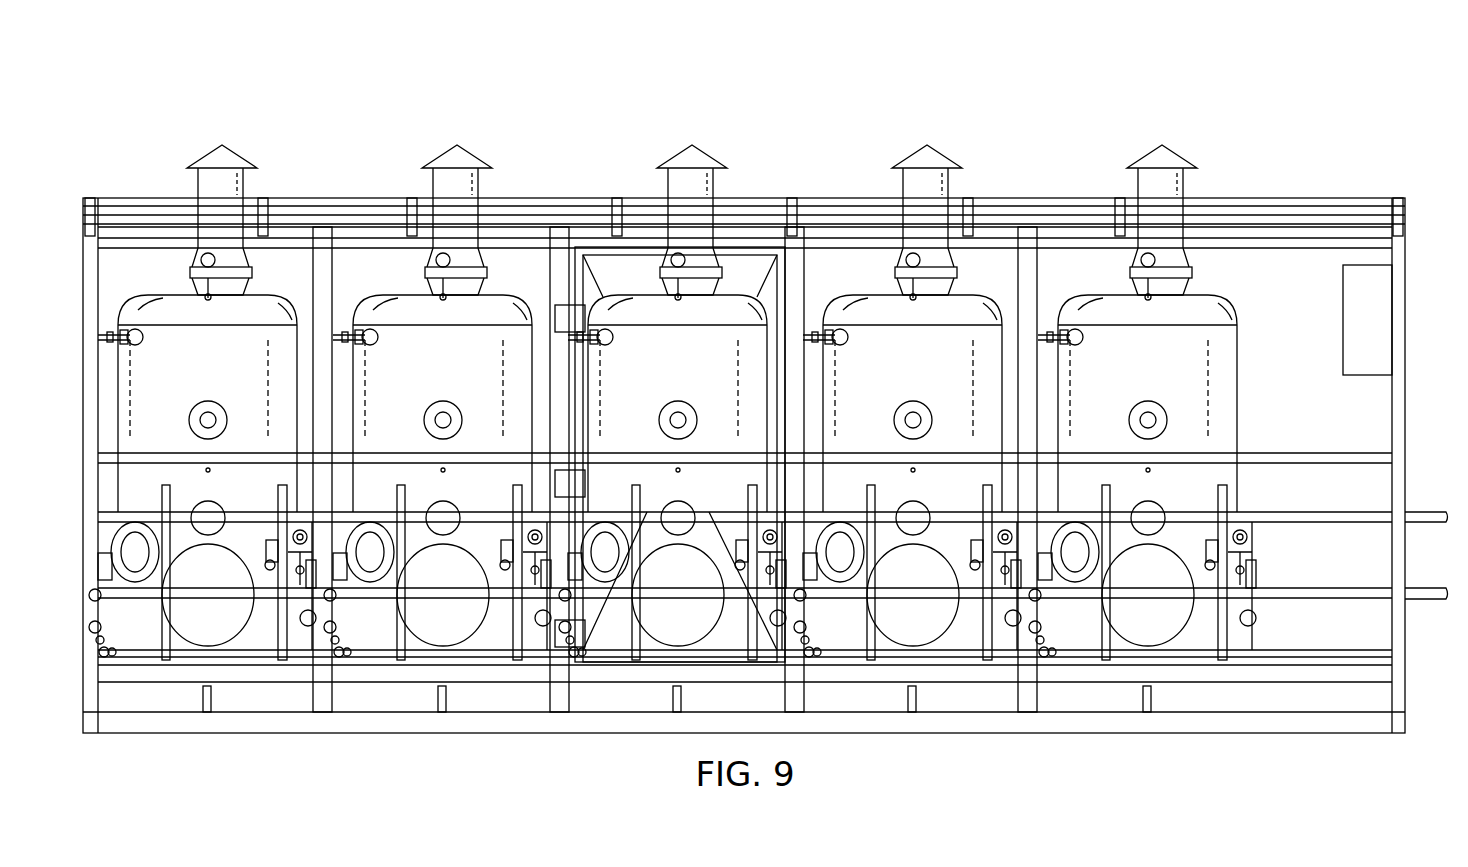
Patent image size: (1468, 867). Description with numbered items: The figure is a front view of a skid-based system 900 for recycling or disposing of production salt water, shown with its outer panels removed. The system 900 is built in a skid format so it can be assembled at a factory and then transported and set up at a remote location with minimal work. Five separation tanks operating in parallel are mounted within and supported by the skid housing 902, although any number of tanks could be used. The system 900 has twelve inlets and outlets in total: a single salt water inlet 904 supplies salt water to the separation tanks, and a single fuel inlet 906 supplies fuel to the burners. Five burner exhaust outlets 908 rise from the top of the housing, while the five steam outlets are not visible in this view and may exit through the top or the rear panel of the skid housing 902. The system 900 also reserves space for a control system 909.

The system 900 is at (1072, 97).
The skid housing 902 is at (1397, 198).
The salt water inlet 904 is at (1420, 600).
The fuel inlet 906 is at (1420, 512).
The burner exhaust outlet 908 is at (210, 158).
The control system 909 is at (1343, 320).